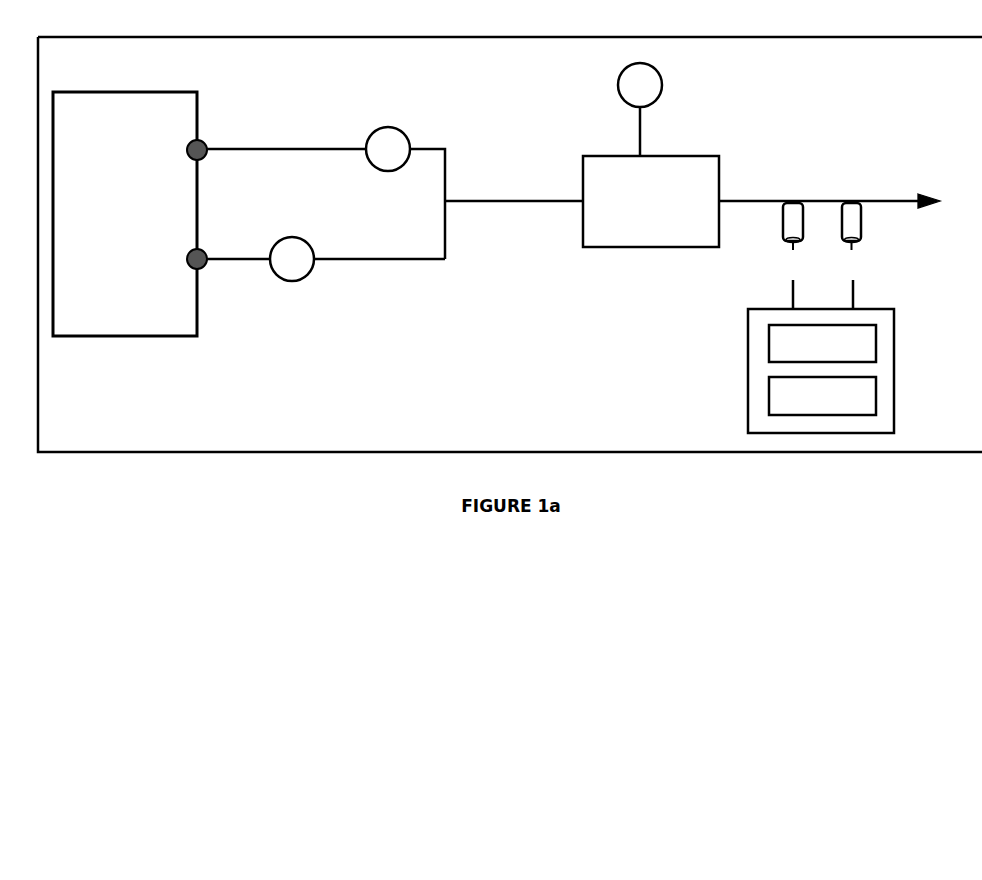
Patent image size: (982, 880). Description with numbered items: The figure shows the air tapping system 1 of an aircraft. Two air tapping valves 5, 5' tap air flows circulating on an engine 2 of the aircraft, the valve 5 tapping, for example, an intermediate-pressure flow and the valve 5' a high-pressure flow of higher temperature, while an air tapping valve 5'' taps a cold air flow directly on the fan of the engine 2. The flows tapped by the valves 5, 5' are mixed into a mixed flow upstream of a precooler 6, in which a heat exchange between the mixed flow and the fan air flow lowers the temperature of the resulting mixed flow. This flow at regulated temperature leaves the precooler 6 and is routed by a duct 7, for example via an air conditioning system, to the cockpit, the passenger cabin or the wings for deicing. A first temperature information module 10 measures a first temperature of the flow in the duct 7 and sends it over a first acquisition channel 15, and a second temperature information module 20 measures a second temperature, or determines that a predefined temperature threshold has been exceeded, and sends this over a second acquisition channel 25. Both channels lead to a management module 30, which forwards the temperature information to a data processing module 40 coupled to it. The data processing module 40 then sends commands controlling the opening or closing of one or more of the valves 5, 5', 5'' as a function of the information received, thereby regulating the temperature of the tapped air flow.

The air tapping system 1 is at (510, 244).
The engine 2 is at (130, 214).
The air tapping valve 5 is at (326, 193).
The air tapping valve 5' is at (326, 274).
The fan air flow tapping valve 5'' is at (657, 109).
The precooler 6 is at (582, 201).
The duct 7 is at (841, 194).
The first temperature information module 10 is at (778, 226).
The first acquisition channel 15 is at (792, 281).
The second temperature information module 20 is at (865, 226).
The second acquisition channel 25 is at (851, 281).
The management module 30 is at (822, 343).
The data processing module 40 is at (822, 396).